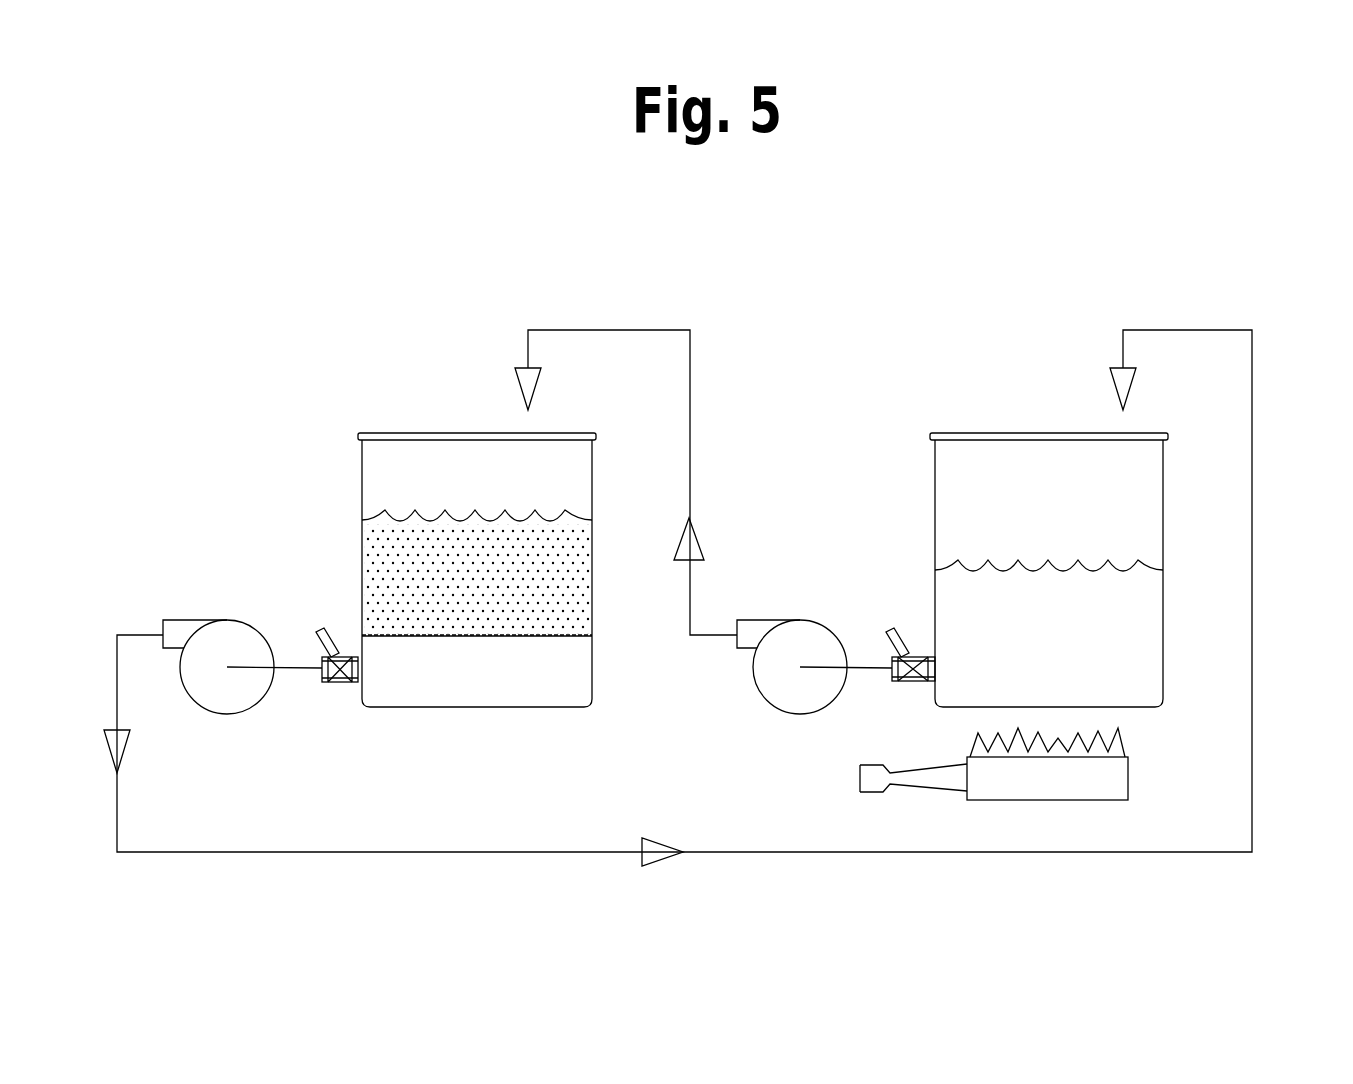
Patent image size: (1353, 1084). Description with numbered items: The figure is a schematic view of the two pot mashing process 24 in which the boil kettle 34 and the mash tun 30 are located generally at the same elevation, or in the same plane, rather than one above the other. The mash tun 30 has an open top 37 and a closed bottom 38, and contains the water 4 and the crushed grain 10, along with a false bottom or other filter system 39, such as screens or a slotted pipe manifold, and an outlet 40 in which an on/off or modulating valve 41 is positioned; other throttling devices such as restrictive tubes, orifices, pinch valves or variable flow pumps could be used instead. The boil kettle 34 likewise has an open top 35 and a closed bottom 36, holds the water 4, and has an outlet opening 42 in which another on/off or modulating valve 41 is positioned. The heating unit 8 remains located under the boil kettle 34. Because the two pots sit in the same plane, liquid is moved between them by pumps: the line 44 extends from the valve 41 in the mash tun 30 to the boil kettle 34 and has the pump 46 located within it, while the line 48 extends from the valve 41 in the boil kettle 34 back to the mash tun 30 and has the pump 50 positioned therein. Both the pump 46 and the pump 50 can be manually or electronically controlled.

The two pot mashing process 24 is at (978, 236).
The mash tun 30 is at (360, 452).
The open top 37 is at (420, 433).
The closed bottom 38 is at (473, 707).
The false bottom or other filter system 39 is at (548, 637).
The crushed grain 10 is at (545, 573).
The water 4 is at (397, 524).
The outlet 40 is at (348, 655).
The on/off or modulating valve 41 is at (318, 682).
The pump 46 is at (225, 620).
The line 44 is at (325, 852).
The line 48 is at (692, 410).
The pump 50 is at (765, 700).
The outlet opening 42 is at (935, 655).
The boil kettle 34 is at (935, 470).
The open top 35 is at (945, 433).
The closed bottom 36 is at (1150, 707).
The heating unit 8 is at (1093, 773).